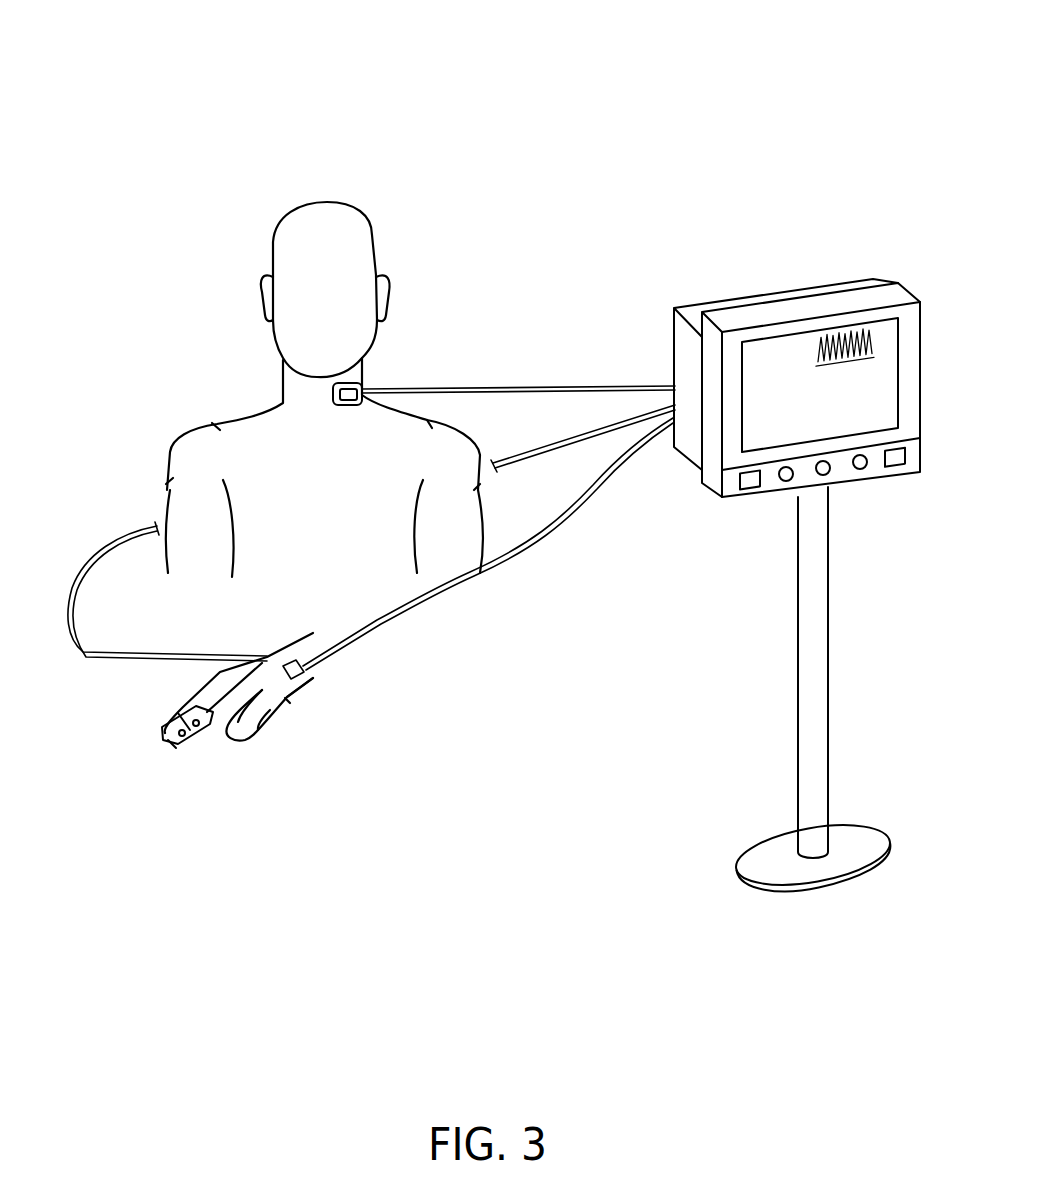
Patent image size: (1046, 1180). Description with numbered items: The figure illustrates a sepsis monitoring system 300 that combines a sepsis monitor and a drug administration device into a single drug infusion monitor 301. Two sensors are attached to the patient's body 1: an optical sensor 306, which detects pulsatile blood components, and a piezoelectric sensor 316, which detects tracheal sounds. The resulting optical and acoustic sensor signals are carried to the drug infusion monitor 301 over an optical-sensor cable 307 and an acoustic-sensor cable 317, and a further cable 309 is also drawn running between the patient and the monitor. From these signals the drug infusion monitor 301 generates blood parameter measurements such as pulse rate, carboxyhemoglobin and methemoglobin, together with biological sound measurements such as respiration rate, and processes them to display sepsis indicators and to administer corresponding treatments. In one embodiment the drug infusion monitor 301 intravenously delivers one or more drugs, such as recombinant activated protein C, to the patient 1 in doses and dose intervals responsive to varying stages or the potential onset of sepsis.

The sepsis monitoring system 300 is at (498, 66).
The drug infusion monitor 301 is at (850, 280).
The piezoelectric sensor 316 is at (360, 381).
The acoustic-sensor cable 317 is at (502, 388).
The optical-sensor cable 307 is at (90, 653).
The oximeter sensor cable 309 is at (557, 518).
The optical sensor 306 is at (162, 743).
The patient's body 1 is at (310, 682).